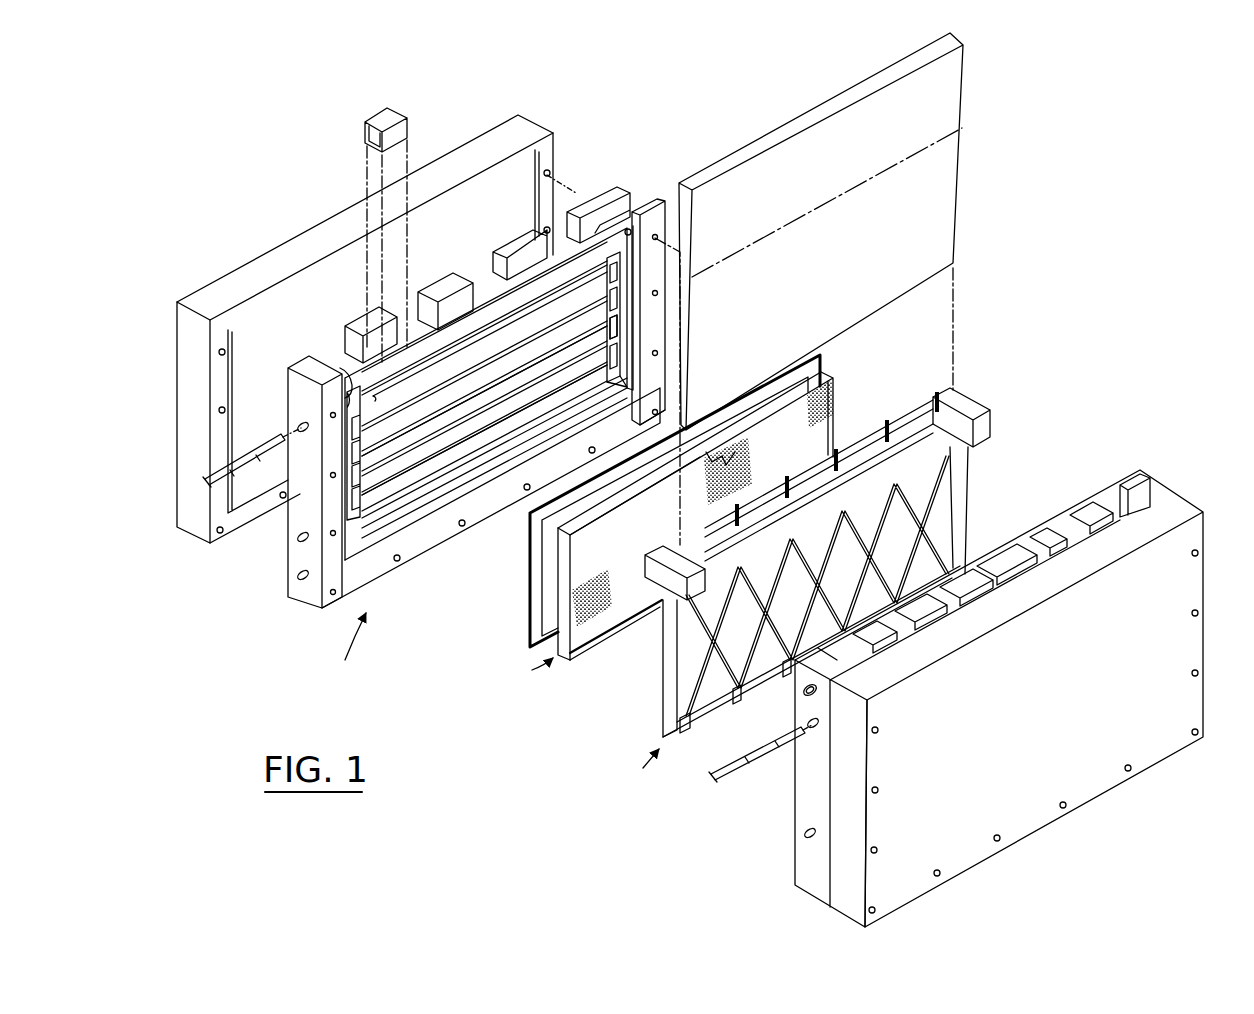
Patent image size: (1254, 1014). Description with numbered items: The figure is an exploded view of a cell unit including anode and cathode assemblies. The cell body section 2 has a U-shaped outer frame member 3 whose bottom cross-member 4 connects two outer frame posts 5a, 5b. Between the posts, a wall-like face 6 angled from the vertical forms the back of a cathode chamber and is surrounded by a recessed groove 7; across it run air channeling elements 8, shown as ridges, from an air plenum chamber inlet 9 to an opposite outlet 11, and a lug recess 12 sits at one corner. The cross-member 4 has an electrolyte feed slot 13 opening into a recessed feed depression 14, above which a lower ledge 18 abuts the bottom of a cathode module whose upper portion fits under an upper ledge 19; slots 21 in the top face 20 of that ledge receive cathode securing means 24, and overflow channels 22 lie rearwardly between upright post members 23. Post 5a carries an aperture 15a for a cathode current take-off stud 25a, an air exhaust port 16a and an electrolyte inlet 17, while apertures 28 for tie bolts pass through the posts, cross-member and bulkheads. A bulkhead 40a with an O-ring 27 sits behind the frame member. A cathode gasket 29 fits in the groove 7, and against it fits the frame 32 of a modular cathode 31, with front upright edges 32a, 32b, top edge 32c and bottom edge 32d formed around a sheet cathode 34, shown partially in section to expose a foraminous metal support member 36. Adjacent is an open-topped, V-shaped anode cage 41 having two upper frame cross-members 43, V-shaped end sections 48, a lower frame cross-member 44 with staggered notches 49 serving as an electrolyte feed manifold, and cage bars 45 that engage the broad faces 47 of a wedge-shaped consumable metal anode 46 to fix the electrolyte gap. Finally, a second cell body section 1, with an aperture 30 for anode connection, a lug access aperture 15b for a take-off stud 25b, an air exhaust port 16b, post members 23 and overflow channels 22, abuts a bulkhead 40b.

The second cell body section 1 is at (794, 887).
The cell body section 2 is at (347, 644).
The outer frame member 3 is at (368, 572).
The bottom cross-member 4 is at (424, 545).
The outer frame post 5a is at (317, 486).
The outer frame post 5b is at (658, 372).
The wall-like face 6 is at (614, 300).
The recessed groove 7 is at (607, 385).
The air channeling elements 8 is at (445, 450).
The air plenum chamber inlet 9 is at (618, 340).
The air plenum chamber outlet 11 is at (352, 494).
The lug recess 12 is at (350, 374).
The electrolyte feed slot 13 is at (666, 392).
The electrolyte feed depression 14 is at (493, 476).
The aperture 15a is at (299, 425).
The lug access aperture 15b is at (809, 726).
The air exhaust port 16a is at (298, 538).
The air exhaust port 16b is at (806, 834).
The electrolyte inlet 17 is at (299, 578).
The lower ledge 18 is at (433, 494).
The upper ledge 19 is at (631, 229).
The top face 20 is at (606, 205).
The slots 21 is at (425, 300).
The overflow channels 22 is at (493, 262).
The upright post members 23 is at (466, 307).
The cathode securing means 24 is at (405, 113).
The cathode current take-off stud 25a is at (205, 483).
The cathode current take-off stud 25b is at (708, 781).
The O-ring 27 is at (232, 365).
The apertures 28 is at (220, 533).
The cathode gasket 29 is at (529, 619).
The aperture 30 is at (818, 696).
The modular cathode 31 is at (530, 670).
The frame 32 is at (568, 650).
The front upright frame edge 32a is at (568, 590).
The front upright frame edge 32b is at (838, 398).
The frame top edge 32c is at (656, 483).
The frame bottom edge 32d is at (634, 618).
The sheet cathode 34 is at (628, 545).
The foraminous metal support member 36 is at (748, 443).
The bulkhead 40a is at (260, 267).
The bulkhead 40b is at (1077, 782).
The anode cage 41 is at (640, 767).
The upper frame cross-members 43 is at (967, 400).
The lower frame cross-member 44 is at (968, 568).
The cage bars 45 is at (896, 587).
The consumable metal anode 46 is at (957, 76).
The anode faces 47 is at (847, 245).
The end sections 48 is at (663, 690).
The notches 49 is at (736, 703).